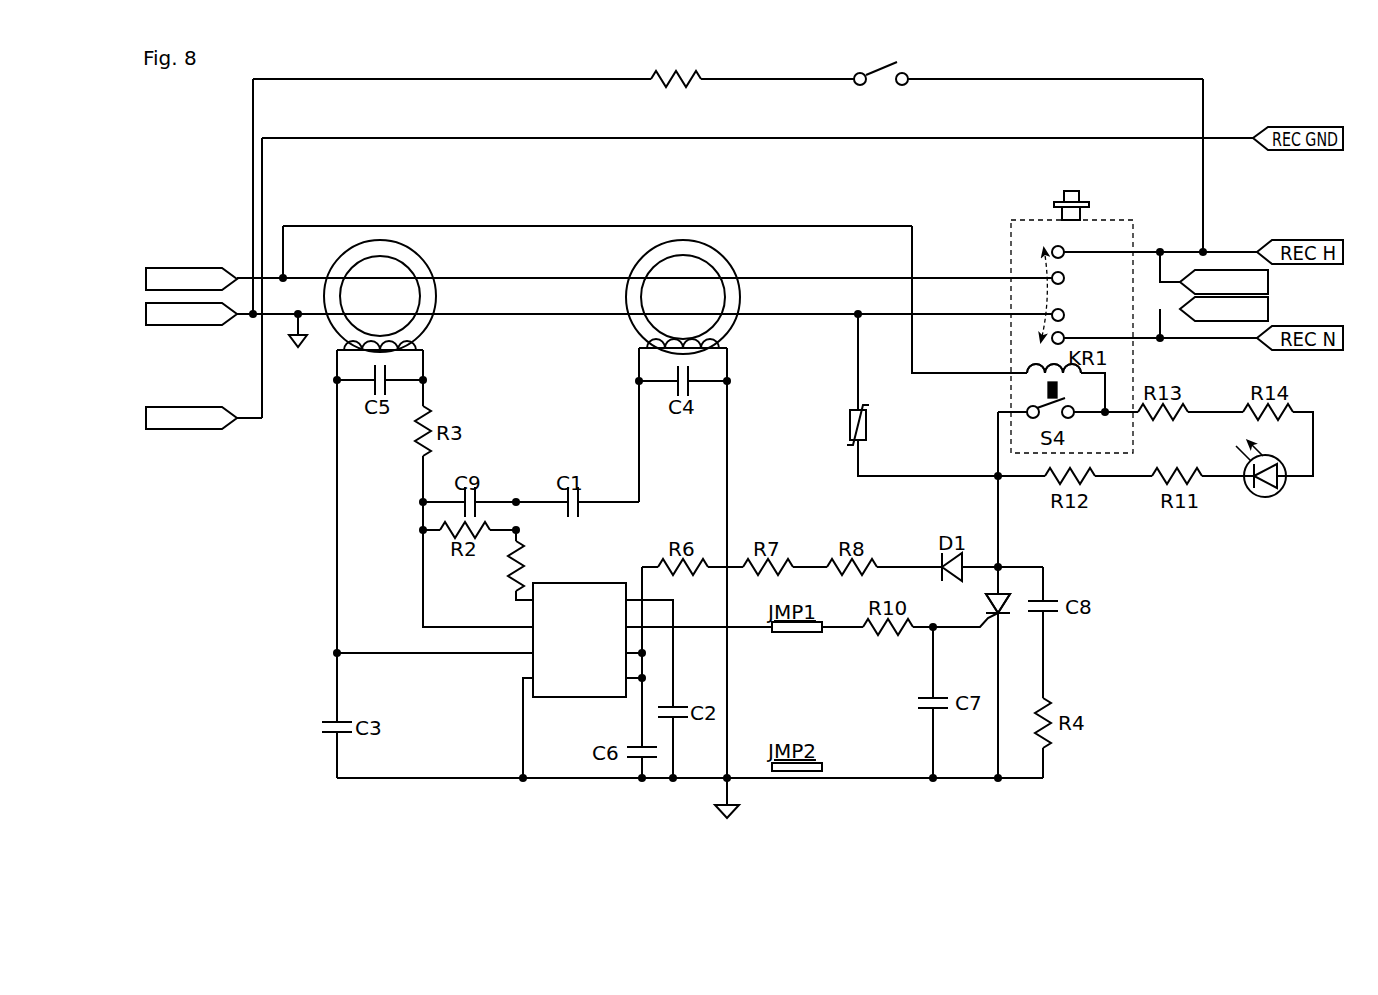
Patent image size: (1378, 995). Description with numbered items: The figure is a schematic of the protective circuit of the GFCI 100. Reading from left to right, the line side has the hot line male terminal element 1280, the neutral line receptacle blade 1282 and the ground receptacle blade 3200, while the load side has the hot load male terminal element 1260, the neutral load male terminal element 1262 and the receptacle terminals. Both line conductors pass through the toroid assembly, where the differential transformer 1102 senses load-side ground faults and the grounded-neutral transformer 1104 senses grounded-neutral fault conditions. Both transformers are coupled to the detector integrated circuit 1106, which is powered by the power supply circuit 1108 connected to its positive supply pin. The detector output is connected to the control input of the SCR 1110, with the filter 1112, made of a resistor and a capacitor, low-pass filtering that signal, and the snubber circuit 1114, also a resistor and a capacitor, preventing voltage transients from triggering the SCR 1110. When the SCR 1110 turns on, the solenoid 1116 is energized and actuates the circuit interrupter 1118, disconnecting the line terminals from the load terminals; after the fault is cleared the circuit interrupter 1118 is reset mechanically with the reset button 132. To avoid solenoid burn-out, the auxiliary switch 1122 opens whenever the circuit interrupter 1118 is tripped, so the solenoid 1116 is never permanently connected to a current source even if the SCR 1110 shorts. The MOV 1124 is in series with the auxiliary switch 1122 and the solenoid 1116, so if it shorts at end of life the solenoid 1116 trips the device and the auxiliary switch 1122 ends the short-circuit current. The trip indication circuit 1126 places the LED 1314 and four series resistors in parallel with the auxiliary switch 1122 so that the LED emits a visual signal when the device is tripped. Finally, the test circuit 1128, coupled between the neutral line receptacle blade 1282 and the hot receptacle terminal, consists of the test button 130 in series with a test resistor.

The GFCI 100 is at (1086, 60).
The test button 130 is at (856, 73).
The test circuit 1128 is at (772, 102).
The reset button 132 is at (1091, 203).
The circuit interrupter 1118 is at (1013, 262).
The solenoid 1116 is at (1030, 366).
The MOV 1124 is at (850, 422).
The auxiliary switch 1122 is at (1028, 416).
The power supply circuit 1108 is at (786, 514).
The SCR 1110 is at (988, 603).
The filter 1112 is at (891, 692).
The snubber circuit 1114 is at (1108, 604).
The trip indication circuit 1126 is at (1173, 516).
The LED 1314 is at (1290, 482).
The hot load male terminal element 1260 is at (1270, 281).
The neutral load male terminal element 1262 is at (1270, 308).
The hot line male terminal element 1280 is at (182, 268).
The neutral line receptacle blade 1282 is at (184, 327).
The ground receptacle blade 3200 is at (184, 431).
The differential transformer 1102 is at (423, 262).
The grounded-neutral transformer 1104 is at (726, 262).
The detector integrated circuit 1106 is at (566, 584).